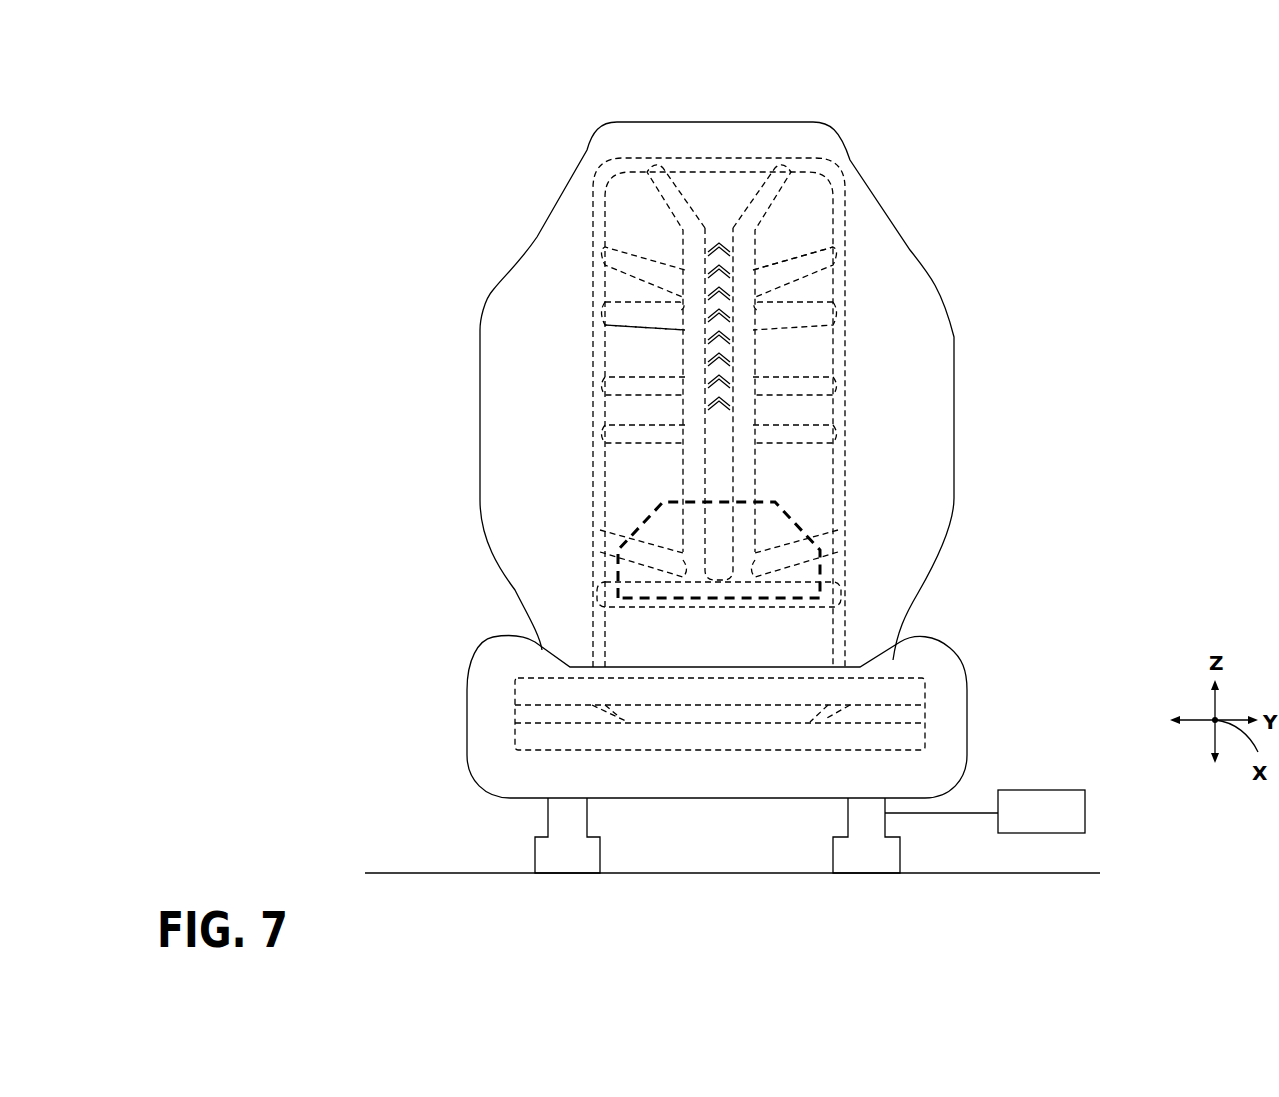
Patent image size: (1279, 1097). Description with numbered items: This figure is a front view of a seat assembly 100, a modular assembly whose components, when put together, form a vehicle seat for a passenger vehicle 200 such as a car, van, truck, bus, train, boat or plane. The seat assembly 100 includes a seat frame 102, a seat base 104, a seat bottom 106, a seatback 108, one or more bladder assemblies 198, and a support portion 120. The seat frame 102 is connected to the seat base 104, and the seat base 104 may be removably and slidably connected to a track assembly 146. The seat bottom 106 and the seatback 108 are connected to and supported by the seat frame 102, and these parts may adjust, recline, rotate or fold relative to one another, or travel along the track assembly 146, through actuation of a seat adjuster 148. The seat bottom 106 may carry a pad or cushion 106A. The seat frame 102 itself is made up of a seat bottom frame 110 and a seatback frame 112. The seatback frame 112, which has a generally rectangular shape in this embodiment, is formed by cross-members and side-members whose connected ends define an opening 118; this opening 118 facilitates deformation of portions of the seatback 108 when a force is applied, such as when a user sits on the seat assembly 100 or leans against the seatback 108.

The passenger vehicle 200 is at (391, 157).
The seat assembly 100 is at (411, 509).
The seatback 108 is at (613, 122).
The seat frame 102 is at (600, 171).
The seatback frame 112 is at (595, 258).
The opening 118 is at (627, 344).
The support portion 120 is at (750, 258).
The bladder assembly 198 is at (785, 507).
The seat bottom 106 is at (950, 644).
The pad or cushion 106A is at (517, 697).
The seat bottom frame 110 is at (517, 737).
The seat base 104 is at (548, 815).
The seat adjuster 148 is at (985, 811).
The track assembly 146 is at (833, 847).